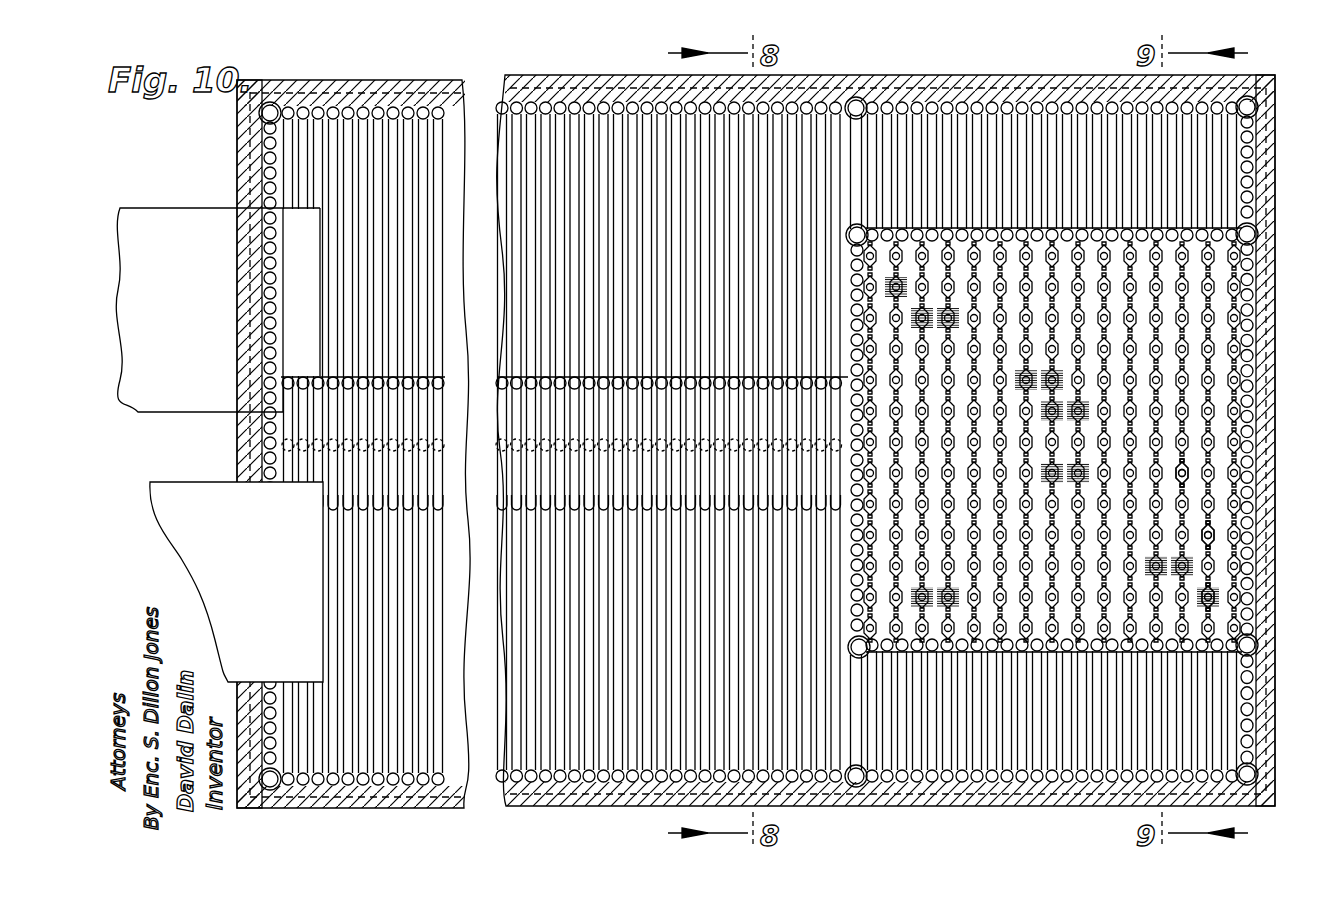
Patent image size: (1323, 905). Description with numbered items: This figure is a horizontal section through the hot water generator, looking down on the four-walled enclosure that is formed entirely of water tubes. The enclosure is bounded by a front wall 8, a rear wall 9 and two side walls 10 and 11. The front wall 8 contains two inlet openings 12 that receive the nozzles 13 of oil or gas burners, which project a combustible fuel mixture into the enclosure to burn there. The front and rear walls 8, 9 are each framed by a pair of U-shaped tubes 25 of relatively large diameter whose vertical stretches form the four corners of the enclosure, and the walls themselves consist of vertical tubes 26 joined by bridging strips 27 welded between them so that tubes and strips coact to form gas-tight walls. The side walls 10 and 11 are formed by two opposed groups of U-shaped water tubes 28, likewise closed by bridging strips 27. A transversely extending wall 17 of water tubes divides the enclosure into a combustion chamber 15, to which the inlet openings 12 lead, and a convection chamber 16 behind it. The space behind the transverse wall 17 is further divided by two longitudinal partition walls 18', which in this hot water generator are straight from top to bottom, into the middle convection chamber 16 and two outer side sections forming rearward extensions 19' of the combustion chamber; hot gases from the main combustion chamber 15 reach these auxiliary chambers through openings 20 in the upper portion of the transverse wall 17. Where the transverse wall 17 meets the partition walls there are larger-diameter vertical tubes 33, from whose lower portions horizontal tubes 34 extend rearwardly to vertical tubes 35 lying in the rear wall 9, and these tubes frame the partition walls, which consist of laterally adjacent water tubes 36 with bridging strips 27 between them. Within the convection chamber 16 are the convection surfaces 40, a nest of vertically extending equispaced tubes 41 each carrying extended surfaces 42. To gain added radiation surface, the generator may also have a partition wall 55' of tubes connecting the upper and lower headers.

The front wall 8 is at (268, 439).
The rear wall 9 is at (1260, 764).
The side wall 10 is at (904, 102).
The side wall 11 is at (936, 744).
The inlet opening 12 is at (240, 231).
The nozzle 13 is at (189, 325).
The combustion chamber 15 is at (382, 142).
The convection chamber 16 is at (1210, 332).
The transverse wall 17 is at (836, 630).
The partition wall 18' is at (1093, 442).
The rearward extension of the combustion chamber 19' is at (1006, 439).
The opening 20 is at (856, 158).
The U-shaped tube 25 is at (270, 102).
The vertical tube 26 is at (264, 140).
The bridging strip 27 is at (548, 102).
The water tube 28 is at (602, 102).
The vertical tube 33 is at (857, 231).
The horizontal tube 34 is at (1195, 230).
The vertical tube 35 is at (1262, 228).
The water tube 36 is at (1175, 214).
The convection surface 40 is at (1186, 472).
The tube 41 is at (1212, 532).
The extended surface 42 is at (1212, 600).
The partition wall 55' is at (564, 361).